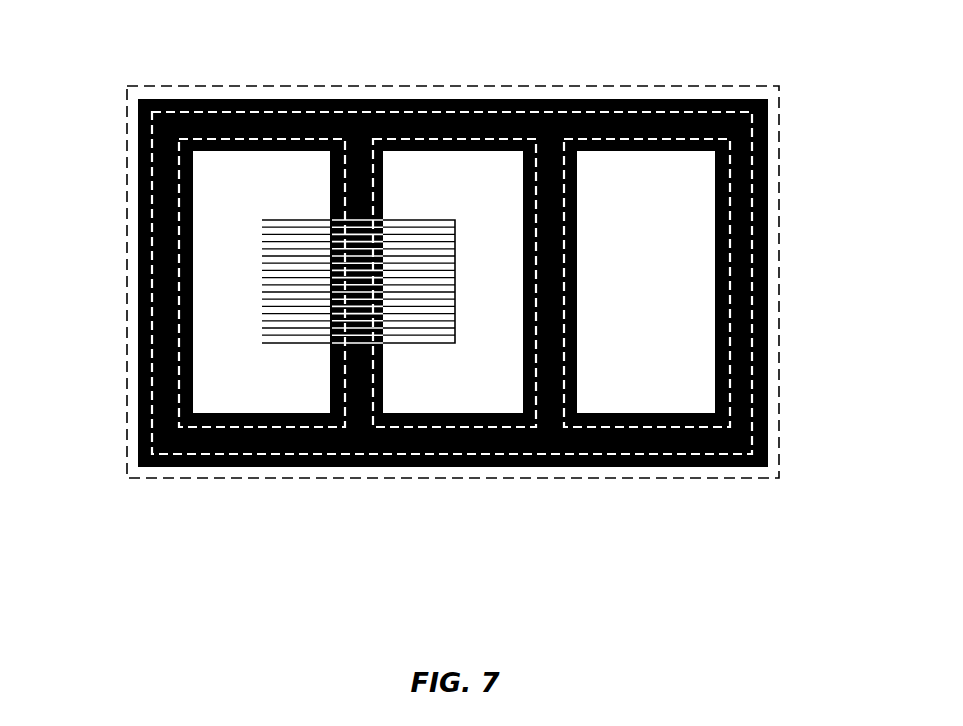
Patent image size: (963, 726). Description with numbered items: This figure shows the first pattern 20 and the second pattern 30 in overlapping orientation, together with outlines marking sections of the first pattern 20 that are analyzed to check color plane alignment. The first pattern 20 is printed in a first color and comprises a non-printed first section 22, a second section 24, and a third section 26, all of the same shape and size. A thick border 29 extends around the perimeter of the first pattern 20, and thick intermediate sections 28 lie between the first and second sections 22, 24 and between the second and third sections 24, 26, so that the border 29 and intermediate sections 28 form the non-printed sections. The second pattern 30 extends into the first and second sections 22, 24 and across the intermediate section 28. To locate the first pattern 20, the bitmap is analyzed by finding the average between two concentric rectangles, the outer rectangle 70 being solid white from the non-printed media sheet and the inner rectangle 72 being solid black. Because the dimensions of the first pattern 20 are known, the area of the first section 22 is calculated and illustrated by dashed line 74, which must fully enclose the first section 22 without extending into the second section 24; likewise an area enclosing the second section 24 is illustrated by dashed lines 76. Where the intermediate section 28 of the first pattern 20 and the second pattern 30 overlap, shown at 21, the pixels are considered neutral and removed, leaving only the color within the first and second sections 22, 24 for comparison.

The first pattern 20 is at (468, 300).
The area of overlap between the first and second patterns 21 is at (355, 310).
The first section 22 is at (210, 273).
The second section 24 is at (478, 168).
The third section 26 is at (670, 168).
The intermediate section 28 is at (357, 165).
The border 29 is at (175, 469).
The second pattern 30 is at (417, 253).
The outer rectangle 70 is at (127, 131).
The inner rectangle 72 is at (187, 113).
The dashed line 74 is at (180, 373).
The dashed lines 76 is at (495, 428).